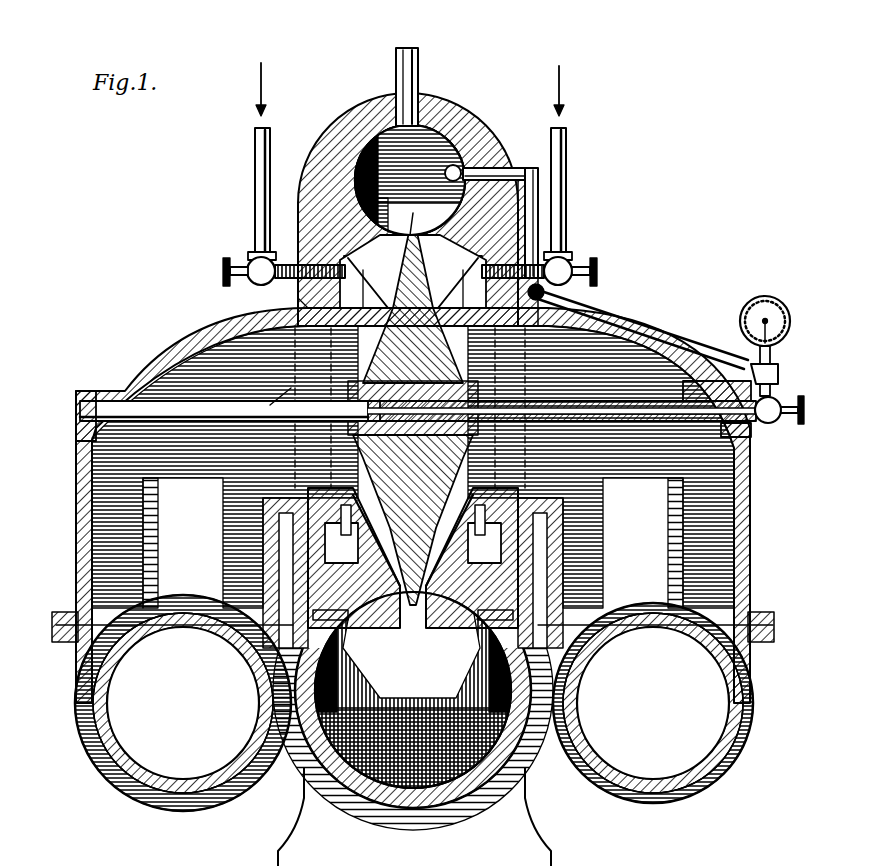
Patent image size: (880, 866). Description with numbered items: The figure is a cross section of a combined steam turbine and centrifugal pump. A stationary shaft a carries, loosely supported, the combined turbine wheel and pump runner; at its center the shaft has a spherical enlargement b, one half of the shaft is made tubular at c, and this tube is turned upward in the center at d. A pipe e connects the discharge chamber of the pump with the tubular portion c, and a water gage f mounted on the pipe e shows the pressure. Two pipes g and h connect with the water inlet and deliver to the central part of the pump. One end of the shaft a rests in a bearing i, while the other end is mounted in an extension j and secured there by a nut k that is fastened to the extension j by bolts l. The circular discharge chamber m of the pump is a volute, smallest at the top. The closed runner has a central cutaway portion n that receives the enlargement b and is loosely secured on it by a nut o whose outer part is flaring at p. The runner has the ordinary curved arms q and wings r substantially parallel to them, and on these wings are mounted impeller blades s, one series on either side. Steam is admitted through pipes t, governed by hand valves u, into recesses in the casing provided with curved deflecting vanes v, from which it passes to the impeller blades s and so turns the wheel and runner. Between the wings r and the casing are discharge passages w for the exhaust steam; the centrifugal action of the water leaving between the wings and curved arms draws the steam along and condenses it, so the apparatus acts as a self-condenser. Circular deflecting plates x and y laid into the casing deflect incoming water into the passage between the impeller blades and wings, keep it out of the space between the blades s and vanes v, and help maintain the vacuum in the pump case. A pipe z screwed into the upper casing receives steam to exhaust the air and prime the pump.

The stationary shaft a is at (253, 411).
The spherical enlargement b is at (317, 408).
The tubular portion of shaft c is at (562, 426).
The upturned tube end d is at (432, 405).
The pipe e is at (597, 312).
The water gage f is at (765, 322).
The water inlet pipe g is at (653, 664).
The water inlet pipe h is at (183, 669).
The bearing i is at (72, 383).
The extension j is at (698, 375).
The nut k is at (743, 428).
The bolts l is at (766, 362).
The circular discharge chamber m is at (438, 112).
The central cutaway portion n is at (285, 385).
The nut o is at (511, 408).
The flaring outer part p is at (504, 408).
The curved arms q is at (368, 520).
The wings r is at (413, 395).
The impeller blades s is at (413, 416).
The steam pipes t is at (247, 150).
The hand valves u is at (222, 262).
The curved deflecting vanes v is at (336, 252).
The discharge passages w is at (416, 606).
The circular deflecting plate x is at (289, 300).
The circular deflecting plate y is at (538, 284).
The pipe z is at (390, 78).